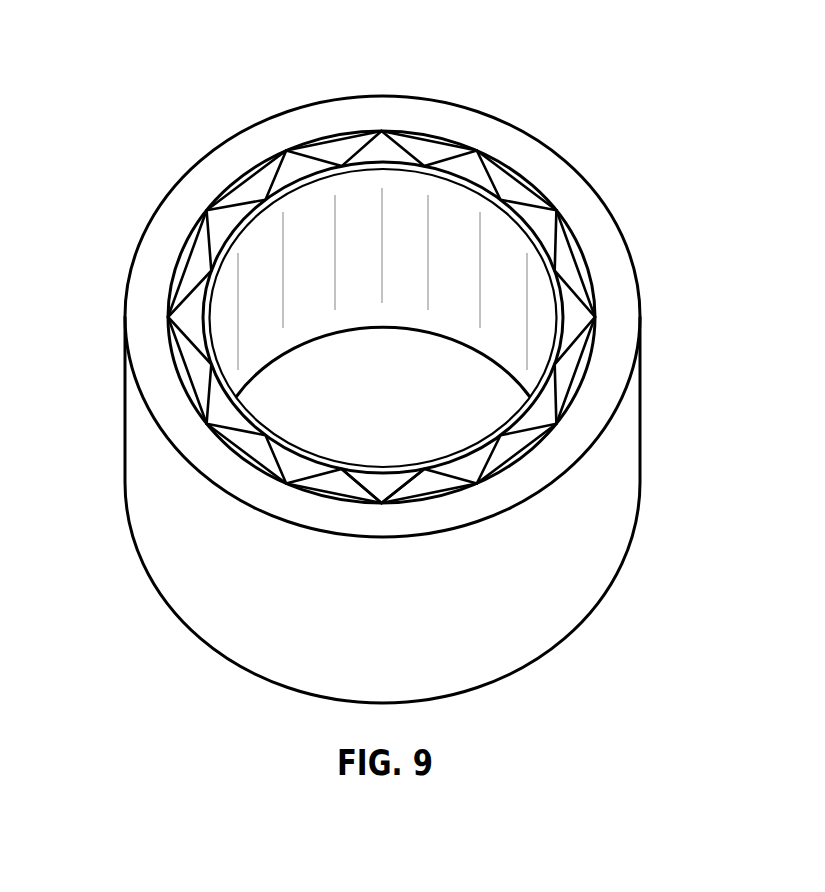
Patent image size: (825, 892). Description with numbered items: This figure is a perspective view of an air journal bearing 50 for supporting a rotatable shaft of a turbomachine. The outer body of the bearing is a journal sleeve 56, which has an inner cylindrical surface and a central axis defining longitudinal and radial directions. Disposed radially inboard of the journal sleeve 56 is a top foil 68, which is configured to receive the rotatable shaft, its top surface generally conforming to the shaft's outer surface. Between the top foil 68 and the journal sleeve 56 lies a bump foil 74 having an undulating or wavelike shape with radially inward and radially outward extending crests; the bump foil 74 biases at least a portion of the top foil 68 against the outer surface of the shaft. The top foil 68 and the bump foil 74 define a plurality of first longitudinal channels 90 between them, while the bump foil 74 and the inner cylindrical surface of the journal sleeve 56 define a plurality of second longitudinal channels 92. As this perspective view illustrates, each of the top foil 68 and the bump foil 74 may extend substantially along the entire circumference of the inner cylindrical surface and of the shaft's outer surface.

The air journal bearing 50 is at (574, 92).
The journal sleeve 56 is at (608, 387).
The top foil 68 is at (543, 243).
The bump foil 74 is at (230, 208).
The first longitudinal channels 90 is at (382, 487).
The second longitudinal channels 92 is at (195, 268).